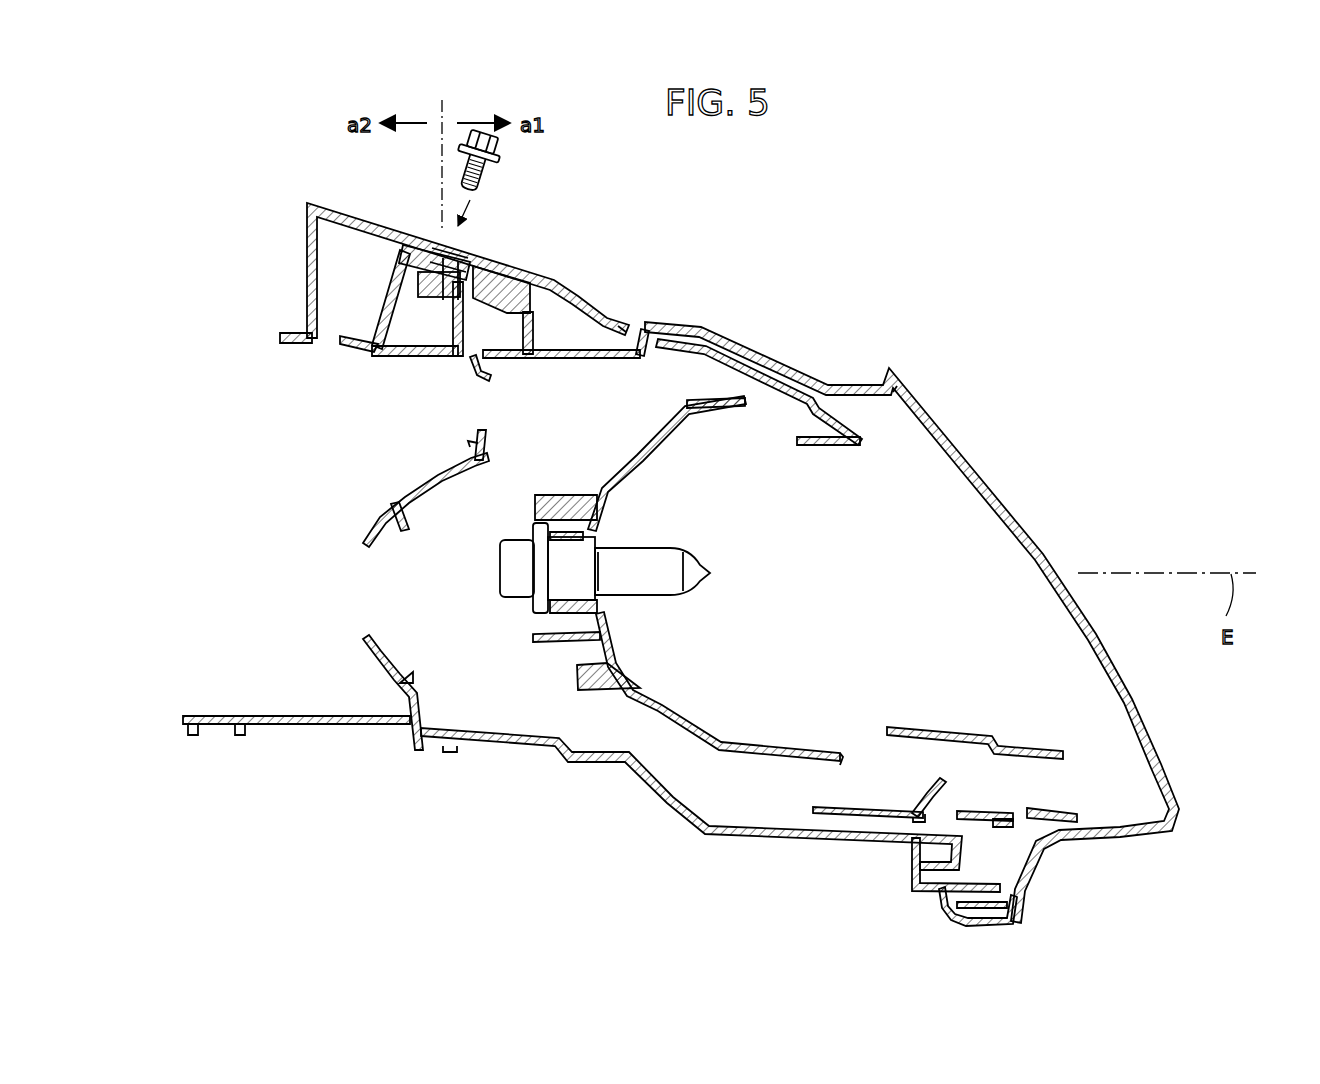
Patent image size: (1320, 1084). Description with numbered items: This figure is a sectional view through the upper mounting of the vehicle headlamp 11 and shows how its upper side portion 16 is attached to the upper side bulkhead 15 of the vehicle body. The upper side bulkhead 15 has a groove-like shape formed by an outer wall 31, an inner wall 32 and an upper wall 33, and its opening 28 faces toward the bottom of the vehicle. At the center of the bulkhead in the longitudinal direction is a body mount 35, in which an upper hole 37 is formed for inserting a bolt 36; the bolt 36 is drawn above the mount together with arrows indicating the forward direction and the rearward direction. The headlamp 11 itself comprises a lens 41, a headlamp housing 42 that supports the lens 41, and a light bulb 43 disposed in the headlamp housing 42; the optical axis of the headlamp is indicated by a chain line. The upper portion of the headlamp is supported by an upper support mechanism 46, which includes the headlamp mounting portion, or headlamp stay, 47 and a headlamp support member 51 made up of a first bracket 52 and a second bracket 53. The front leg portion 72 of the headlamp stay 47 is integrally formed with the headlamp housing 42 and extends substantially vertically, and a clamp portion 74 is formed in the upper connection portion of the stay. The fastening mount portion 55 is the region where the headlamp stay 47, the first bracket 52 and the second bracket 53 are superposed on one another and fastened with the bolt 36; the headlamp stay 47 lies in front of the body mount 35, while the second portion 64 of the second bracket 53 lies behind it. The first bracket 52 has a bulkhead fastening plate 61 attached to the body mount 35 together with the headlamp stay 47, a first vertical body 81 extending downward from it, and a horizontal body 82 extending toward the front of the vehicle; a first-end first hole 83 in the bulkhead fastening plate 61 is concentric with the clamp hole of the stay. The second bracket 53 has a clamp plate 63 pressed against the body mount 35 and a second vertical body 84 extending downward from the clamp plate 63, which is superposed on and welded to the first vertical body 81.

The vehicle headlamp 11 is at (885, 318).
The upper side bulkhead 15 is at (358, 215).
The upper side portion 16 is at (717, 330).
The opening 28 is at (338, 315).
The outer wall 31 is at (597, 312).
The inner wall 32 is at (305, 263).
The upper wall 33 is at (383, 225).
The body mount 35 is at (477, 262).
The bolt 36 is at (500, 150).
The upper hole 37 is at (458, 240).
The lens 41 is at (1031, 530).
The headlamp housing 42 is at (370, 520).
The light bulb 43 is at (677, 550).
The upper support mechanism 46 is at (260, 371).
The headlamp mounting portion 47 is at (537, 316).
The headlamp support member 51 is at (400, 258).
The first bracket 52 is at (380, 360).
The second bracket 53 is at (377, 357).
The fastening mount portion 55 is at (382, 246).
The bulkhead fastening plate 61 is at (453, 352).
The clamp plate 63 is at (433, 238).
The second portion 64 is at (347, 345).
The front leg portion 72 is at (555, 365).
The clamp portion 74 is at (404, 243).
The first vertical body 81 is at (390, 285).
The horizontal body 82 is at (410, 360).
The first-end first hole 83 is at (434, 298).
The second vertical body 84 is at (380, 298).